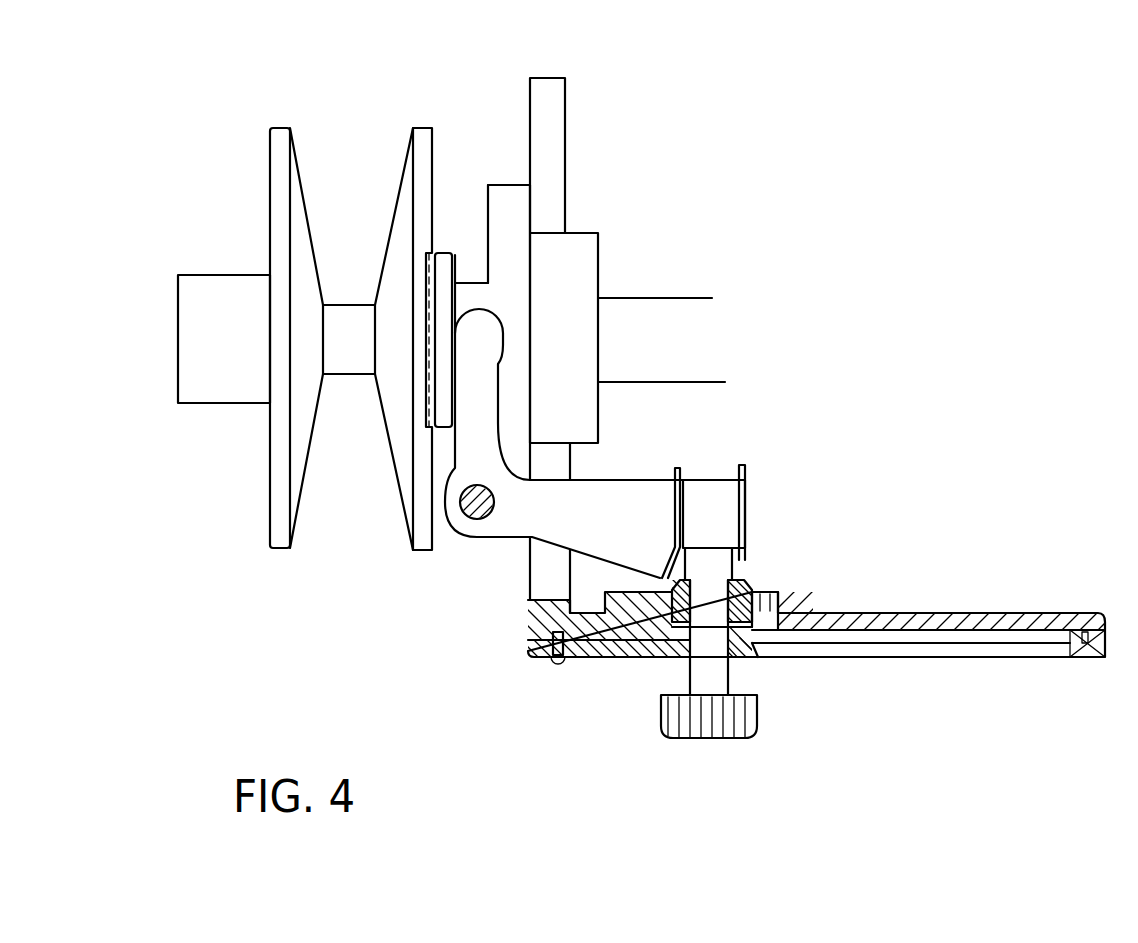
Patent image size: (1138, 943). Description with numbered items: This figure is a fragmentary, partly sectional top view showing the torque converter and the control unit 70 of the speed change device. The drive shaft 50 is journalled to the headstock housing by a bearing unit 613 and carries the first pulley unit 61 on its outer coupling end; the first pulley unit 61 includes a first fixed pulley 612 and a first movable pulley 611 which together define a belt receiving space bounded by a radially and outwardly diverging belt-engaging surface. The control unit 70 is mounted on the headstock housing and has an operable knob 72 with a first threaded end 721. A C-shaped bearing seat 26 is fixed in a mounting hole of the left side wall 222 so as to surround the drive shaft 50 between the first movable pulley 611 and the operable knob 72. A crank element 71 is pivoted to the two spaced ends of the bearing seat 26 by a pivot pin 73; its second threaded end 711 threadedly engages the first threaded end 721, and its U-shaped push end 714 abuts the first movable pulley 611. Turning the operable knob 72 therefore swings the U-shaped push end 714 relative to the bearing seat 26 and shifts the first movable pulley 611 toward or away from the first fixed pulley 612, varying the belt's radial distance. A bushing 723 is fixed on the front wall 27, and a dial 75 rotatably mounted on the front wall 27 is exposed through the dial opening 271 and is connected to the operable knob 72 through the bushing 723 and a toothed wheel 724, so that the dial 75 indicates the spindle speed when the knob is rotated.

The first pulley unit 61 is at (284, 127).
The first movable pulley 611 is at (413, 543).
The first fixed pulley 612 is at (277, 545).
The bearing unit 613 is at (442, 252).
The C-shaped bearing seat 26 is at (512, 184).
The left side wall 222 is at (548, 129).
The drive shaft 50 is at (676, 306).
The U-shaped push end 714 is at (479, 314).
The crank element 71 is at (507, 540).
The pivot pin 73 is at (481, 508).
The operable knob 72 is at (703, 478).
The first threaded end 721 is at (748, 478).
The second threaded end 711 is at (670, 550).
The bushing 723 is at (745, 586).
The toothed wheel 724 is at (729, 658).
The control unit 70 is at (673, 741).
The front wall 27 is at (1085, 658).
The dial 75 is at (947, 631).
The dial opening 271 is at (988, 650).